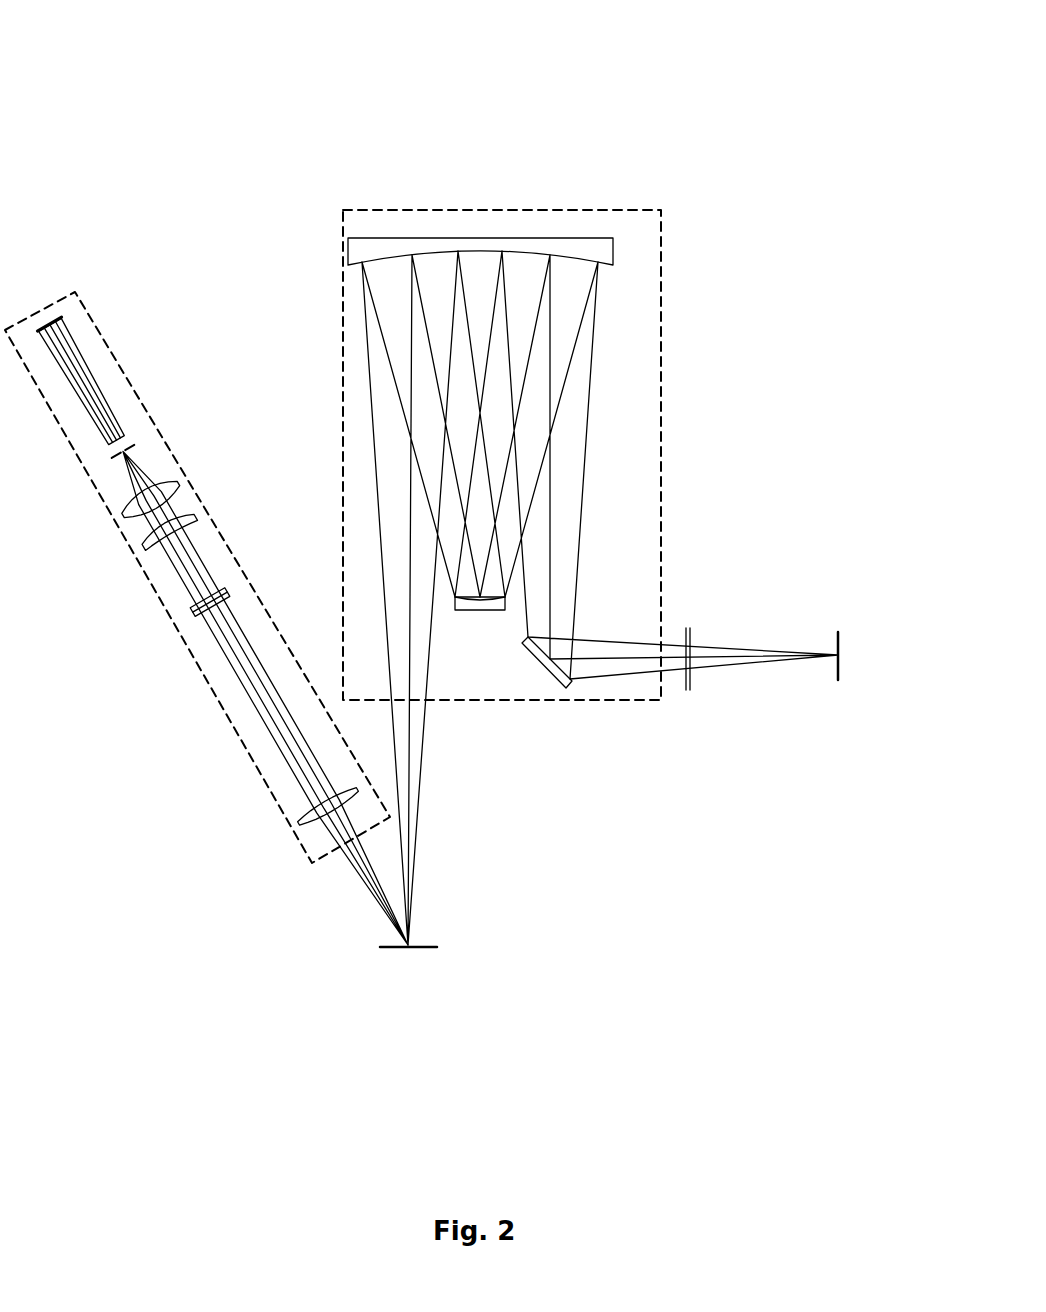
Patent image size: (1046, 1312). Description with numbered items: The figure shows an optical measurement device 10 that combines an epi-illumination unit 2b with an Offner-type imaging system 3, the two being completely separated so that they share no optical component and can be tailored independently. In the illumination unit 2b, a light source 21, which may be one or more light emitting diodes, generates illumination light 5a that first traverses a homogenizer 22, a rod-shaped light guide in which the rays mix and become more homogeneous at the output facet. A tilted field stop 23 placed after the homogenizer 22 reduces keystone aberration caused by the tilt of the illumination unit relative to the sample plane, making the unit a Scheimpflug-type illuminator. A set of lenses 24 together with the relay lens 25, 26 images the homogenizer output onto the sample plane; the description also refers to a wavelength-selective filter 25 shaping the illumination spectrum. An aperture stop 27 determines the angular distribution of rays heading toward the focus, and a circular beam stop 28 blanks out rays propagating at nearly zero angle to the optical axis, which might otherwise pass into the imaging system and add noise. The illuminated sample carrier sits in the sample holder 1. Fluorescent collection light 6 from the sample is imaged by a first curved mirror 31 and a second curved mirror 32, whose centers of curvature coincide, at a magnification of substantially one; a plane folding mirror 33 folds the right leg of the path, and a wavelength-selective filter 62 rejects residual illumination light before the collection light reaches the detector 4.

The optical system 10 is at (190, 101).
The sample holder 1 is at (412, 968).
The epi-illumination unit 2b is at (78, 307).
The Offner-type imaging system 3 is at (638, 243).
The detector 4 is at (851, 655).
The illumination light 5a is at (252, 719).
The collection light 6 is at (603, 421).
The light source 21 is at (46, 313).
The homogenizer 22 is at (93, 387).
The tilted field stop 23 is at (133, 429).
The collimating lens group 24 is at (163, 566).
The relay lens 25 is at (224, 578).
The relay lens 26 is at (312, 834).
The aperture stop 27 is at (187, 618).
The circular beam stop 28 is at (238, 600).
The first curved mirror 31 is at (408, 248).
The second curved mirror 32 is at (477, 612).
The folding mirror 33 is at (560, 678).
The wavelength-selective filter 62 is at (690, 623).